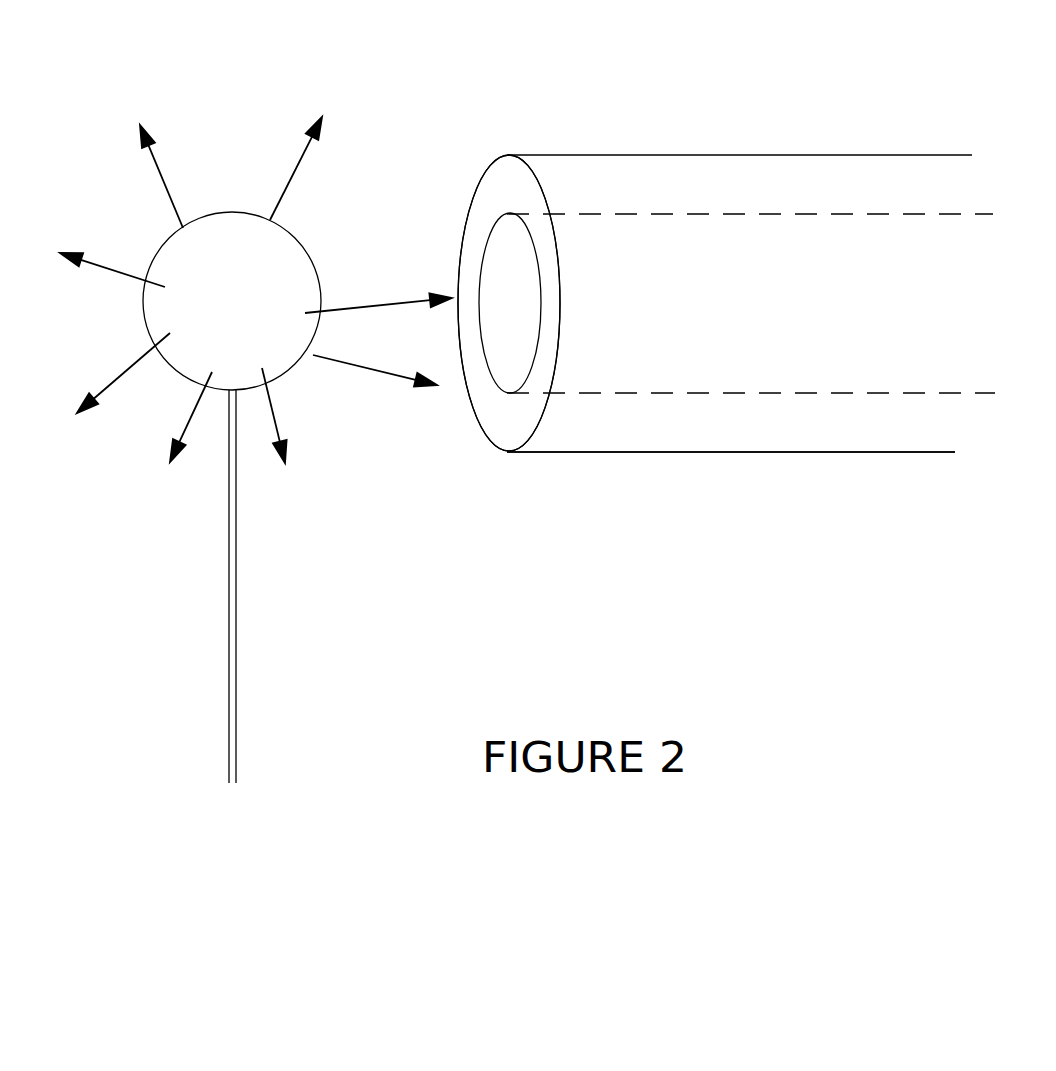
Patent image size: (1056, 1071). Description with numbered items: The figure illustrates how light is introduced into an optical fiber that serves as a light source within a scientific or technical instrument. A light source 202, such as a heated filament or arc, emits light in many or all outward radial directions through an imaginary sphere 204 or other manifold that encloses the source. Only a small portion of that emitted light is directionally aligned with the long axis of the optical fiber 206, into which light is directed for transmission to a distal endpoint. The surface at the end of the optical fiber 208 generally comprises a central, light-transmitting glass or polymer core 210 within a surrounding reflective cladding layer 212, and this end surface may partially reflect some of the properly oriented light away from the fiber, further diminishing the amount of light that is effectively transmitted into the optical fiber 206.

The light source 202 is at (209, 497).
The imaginary sphere 204 is at (256, 311).
The optical fiber 206 is at (715, 349).
The end of the optical fiber 208 is at (466, 274).
The optical fiber core 210 is at (751, 402).
The reflective cladding layer 212 is at (731, 485).